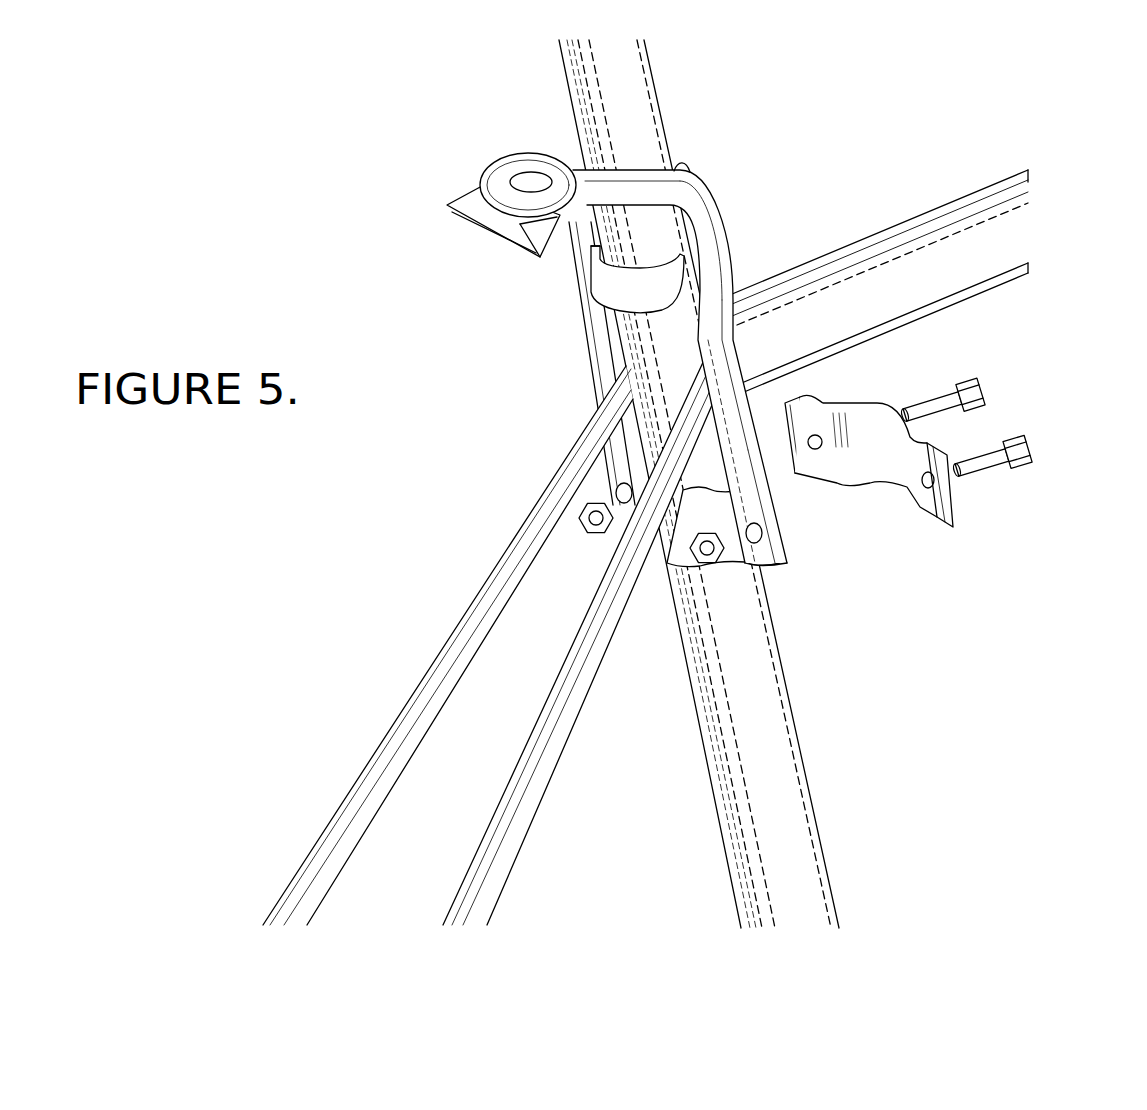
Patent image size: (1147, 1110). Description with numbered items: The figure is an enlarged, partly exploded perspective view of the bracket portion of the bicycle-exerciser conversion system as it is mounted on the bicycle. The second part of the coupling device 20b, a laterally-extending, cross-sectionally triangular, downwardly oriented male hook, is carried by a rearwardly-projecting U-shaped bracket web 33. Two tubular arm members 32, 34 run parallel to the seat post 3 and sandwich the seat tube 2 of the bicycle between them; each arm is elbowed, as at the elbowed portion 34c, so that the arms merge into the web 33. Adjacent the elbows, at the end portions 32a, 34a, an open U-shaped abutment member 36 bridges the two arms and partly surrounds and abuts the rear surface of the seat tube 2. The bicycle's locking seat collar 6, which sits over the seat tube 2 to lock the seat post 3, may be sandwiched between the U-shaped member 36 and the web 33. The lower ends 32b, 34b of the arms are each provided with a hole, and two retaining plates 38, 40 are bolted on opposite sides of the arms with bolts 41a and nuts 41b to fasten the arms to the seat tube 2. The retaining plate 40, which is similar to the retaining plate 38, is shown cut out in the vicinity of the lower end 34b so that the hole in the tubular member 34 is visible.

The seat tube 2 is at (672, 365).
The seat post 3 is at (632, 134).
The locking seat collar 6 is at (719, 128).
The second part of the coupling device 20b is at (439, 245).
The tubular arm member 32 is at (534, 363).
The end portion of tubular arm member 32a is at (502, 148).
The lower end of tubular arm member 32b is at (530, 478).
The rearwardly-projecting web 33 is at (432, 177).
The tubular arm member 34 is at (733, 365).
The end portion of tubular arm member 34a is at (797, 326).
The lower end of tubular arm member 34b is at (838, 518).
The elbowed portion of tubular arm member 34c is at (748, 212).
The open U-shaped abutment member 36 is at (660, 309).
The retaining plate 38 is at (890, 462).
The retaining plate 40 is at (722, 529).
The bolts 41a is at (526, 540).
The nuts 41b is at (1015, 427).